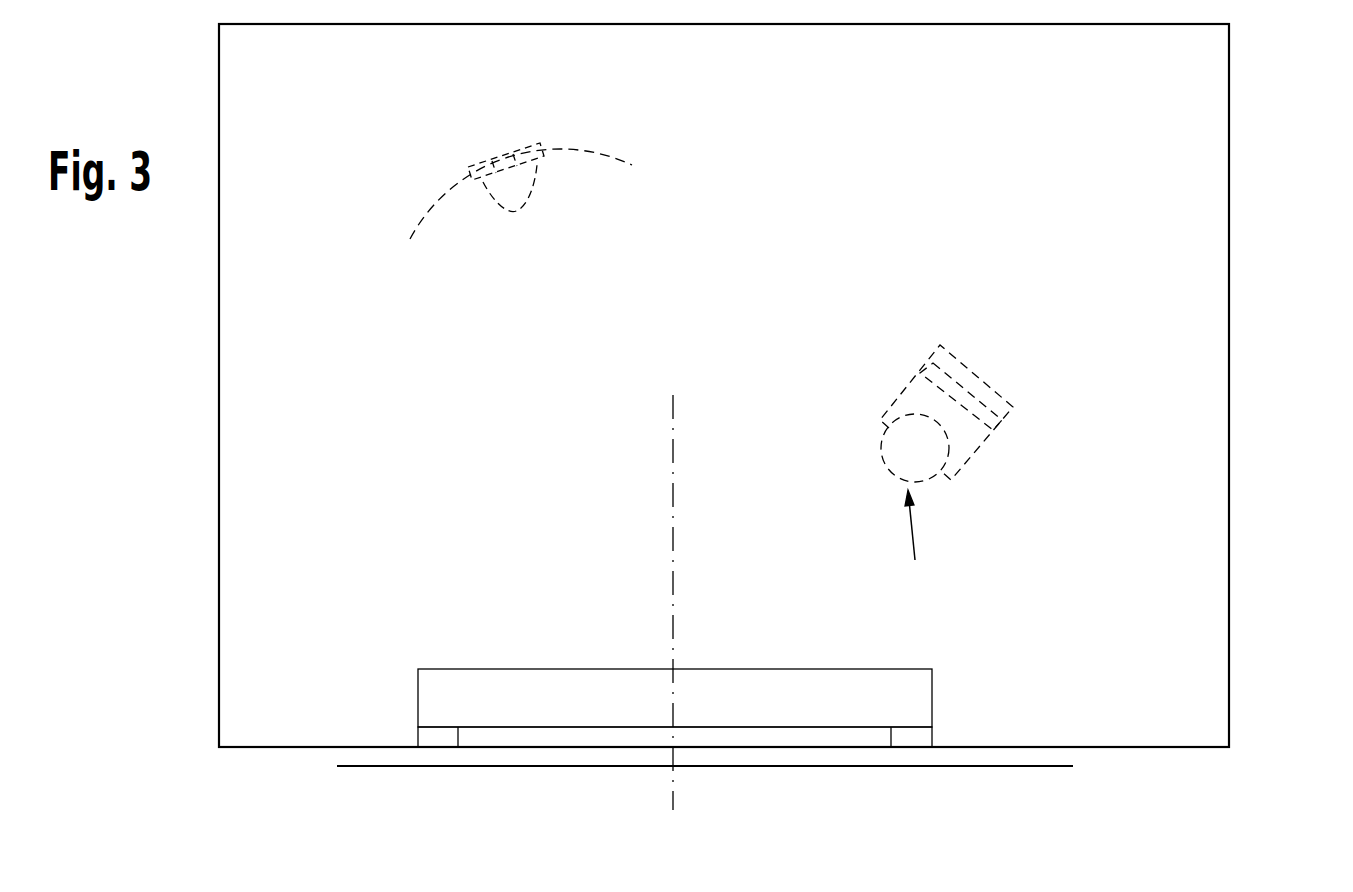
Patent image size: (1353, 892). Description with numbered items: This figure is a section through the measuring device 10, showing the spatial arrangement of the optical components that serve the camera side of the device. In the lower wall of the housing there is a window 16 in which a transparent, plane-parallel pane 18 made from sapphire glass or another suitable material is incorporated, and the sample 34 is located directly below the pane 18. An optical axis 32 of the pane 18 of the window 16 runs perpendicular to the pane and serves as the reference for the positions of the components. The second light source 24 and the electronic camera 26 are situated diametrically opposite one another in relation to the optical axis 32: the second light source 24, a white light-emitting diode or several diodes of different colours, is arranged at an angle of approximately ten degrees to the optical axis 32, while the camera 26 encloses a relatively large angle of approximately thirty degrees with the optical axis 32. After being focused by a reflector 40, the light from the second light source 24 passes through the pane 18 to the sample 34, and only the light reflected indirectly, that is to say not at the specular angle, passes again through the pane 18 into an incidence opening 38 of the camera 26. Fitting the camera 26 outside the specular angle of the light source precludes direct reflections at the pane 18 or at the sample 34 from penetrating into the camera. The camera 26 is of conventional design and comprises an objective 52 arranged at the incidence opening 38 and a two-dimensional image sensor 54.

The measuring device 10 is at (1266, 114).
The window 16 is at (932, 718).
The pane 18 is at (803, 748).
The second light source 24 is at (522, 183).
The electronic camera 26 is at (987, 433).
The optical axis 32 is at (672, 485).
The sample 34 is at (497, 767).
The incidence opening 38 is at (917, 542).
The reflector 40 is at (613, 158).
The objective 52 is at (893, 447).
The two-dimensional image sensor 54 is at (940, 380).